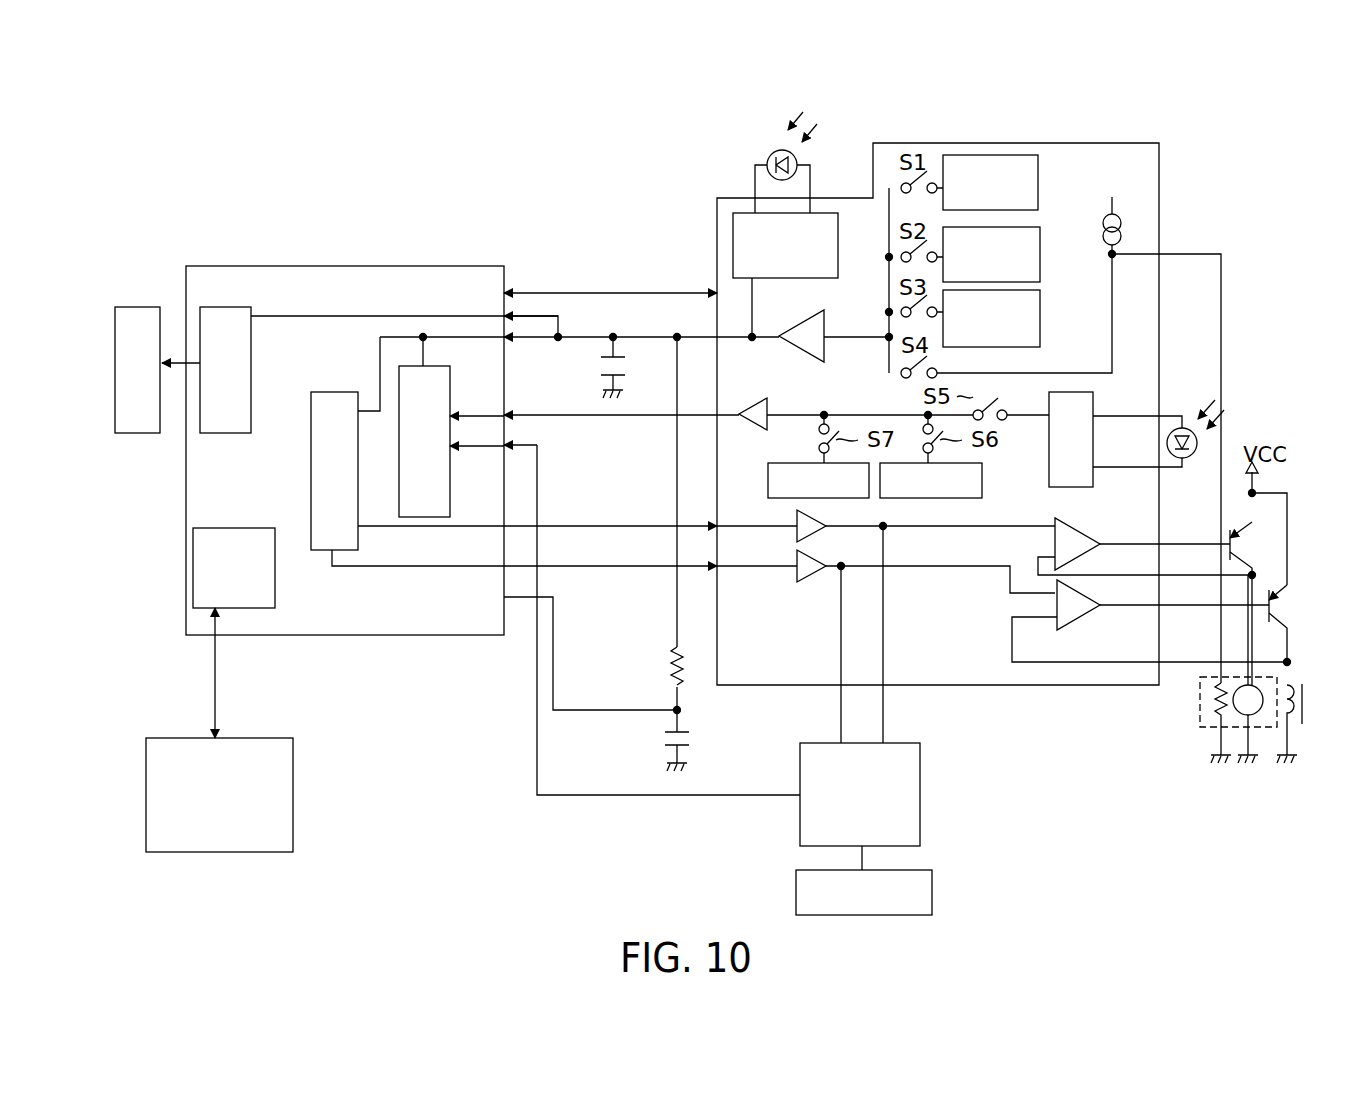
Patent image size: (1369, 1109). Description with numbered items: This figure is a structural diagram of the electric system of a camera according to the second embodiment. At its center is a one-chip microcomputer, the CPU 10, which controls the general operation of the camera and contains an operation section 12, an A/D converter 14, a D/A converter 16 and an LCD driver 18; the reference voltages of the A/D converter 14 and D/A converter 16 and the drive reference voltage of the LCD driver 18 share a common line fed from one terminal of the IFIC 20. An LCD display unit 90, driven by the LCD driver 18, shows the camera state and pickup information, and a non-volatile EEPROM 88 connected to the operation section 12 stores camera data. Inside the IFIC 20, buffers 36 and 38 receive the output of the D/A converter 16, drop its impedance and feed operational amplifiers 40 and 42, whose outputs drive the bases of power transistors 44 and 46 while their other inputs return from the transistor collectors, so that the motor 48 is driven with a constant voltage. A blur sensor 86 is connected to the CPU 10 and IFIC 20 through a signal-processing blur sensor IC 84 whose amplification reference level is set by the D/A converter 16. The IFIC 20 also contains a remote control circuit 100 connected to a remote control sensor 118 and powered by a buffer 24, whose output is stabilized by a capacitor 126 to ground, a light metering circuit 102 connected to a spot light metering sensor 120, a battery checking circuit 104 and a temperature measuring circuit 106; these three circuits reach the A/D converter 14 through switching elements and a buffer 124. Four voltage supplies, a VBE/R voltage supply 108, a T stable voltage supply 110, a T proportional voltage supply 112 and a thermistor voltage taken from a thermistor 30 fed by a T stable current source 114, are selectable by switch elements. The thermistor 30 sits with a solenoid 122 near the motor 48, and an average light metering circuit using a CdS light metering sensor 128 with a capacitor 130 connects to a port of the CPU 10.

The one-chip microcomputer (CPU) 10 is at (440, 266).
The operation section 12 is at (275, 595).
The A/D converter 14 is at (450, 489).
The D/A converter 16 is at (311, 497).
The LCD driver 18 is at (232, 433).
The IFIC 20 is at (985, 685).
The buffer 24 is at (824, 326).
The thermistor 30 is at (1200, 692).
The buffer 36 is at (797, 534).
The buffer 38 is at (810, 575).
The operational amplifier 40 is at (1080, 524).
The operational amplifier 42 is at (1082, 620).
The power transistor 44 is at (1238, 546).
The power transistor 46 is at (1278, 612).
The motor 48 is at (1258, 712).
The blur sensor IC 84 is at (920, 777).
The blur sensor 86 is at (932, 892).
The non-volatile memory (EEPROM) 88 is at (293, 797).
The LCD display unit 90 is at (138, 433).
The remote control circuit 100 is at (812, 278).
The light metering circuit 102 is at (1093, 398).
The battery checking circuit (BC circuit) 104 is at (982, 495).
The temperature measuring circuit 106 is at (768, 478).
The VBE/R voltage supply 108 is at (1038, 175).
The T stable voltage supply 110 is at (1040, 240).
The T proportional voltage supply 112 is at (1040, 318).
The T stable current source 114 is at (1104, 240).
The remote control sensor 118 is at (797, 160).
The light metering sensor 120 is at (1191, 420).
The solenoid 122 is at (1306, 698).
The buffer 124 is at (767, 406).
The capacitor 126 is at (599, 374).
The light metering sensor (Cds) 128 is at (686, 668).
The capacitor 130 is at (692, 738).